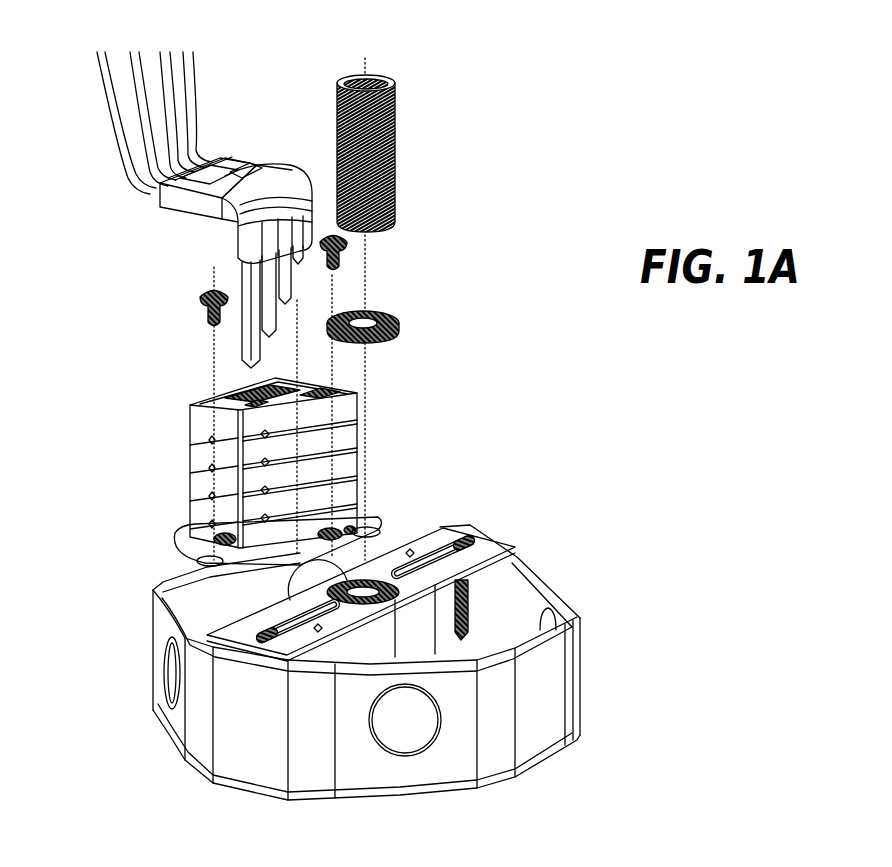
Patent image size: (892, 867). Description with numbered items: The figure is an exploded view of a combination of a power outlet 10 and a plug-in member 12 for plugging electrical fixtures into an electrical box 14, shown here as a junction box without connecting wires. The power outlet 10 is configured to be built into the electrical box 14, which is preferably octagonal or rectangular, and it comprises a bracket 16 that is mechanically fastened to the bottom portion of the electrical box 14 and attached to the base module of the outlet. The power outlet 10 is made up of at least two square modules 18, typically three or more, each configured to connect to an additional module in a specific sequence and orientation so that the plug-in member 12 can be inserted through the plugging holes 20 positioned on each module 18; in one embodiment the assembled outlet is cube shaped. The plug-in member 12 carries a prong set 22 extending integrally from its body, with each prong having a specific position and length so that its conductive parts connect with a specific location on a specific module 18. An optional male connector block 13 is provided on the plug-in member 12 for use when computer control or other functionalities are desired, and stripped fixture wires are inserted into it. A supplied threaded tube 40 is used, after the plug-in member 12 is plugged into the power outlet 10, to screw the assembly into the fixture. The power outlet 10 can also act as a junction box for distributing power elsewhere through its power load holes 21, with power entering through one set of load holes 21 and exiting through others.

The power outlet 10 is at (140, 426).
The plug-in member 12 is at (298, 183).
The male connector block 13 is at (293, 187).
The electrical box 14 is at (577, 658).
The bracket 16 is at (183, 540).
The square modules 18 is at (340, 503).
The plugging holes 20 is at (245, 392).
The power load holes 21 is at (193, 443).
The prong set 22 is at (328, 297).
The threaded tube 40 is at (397, 180).